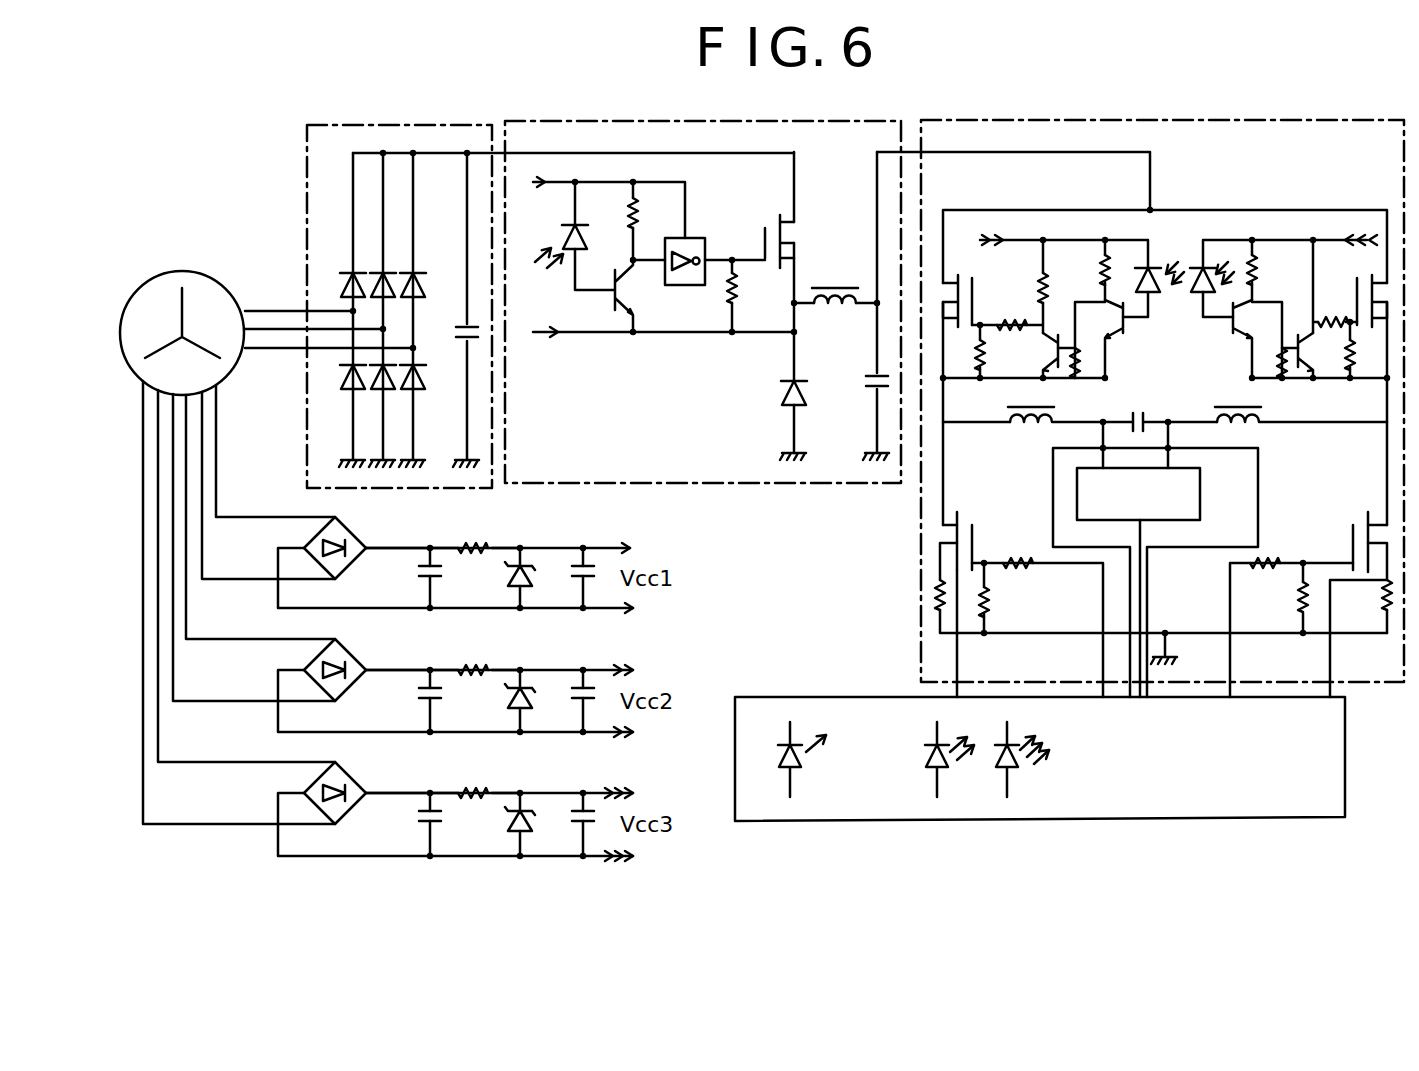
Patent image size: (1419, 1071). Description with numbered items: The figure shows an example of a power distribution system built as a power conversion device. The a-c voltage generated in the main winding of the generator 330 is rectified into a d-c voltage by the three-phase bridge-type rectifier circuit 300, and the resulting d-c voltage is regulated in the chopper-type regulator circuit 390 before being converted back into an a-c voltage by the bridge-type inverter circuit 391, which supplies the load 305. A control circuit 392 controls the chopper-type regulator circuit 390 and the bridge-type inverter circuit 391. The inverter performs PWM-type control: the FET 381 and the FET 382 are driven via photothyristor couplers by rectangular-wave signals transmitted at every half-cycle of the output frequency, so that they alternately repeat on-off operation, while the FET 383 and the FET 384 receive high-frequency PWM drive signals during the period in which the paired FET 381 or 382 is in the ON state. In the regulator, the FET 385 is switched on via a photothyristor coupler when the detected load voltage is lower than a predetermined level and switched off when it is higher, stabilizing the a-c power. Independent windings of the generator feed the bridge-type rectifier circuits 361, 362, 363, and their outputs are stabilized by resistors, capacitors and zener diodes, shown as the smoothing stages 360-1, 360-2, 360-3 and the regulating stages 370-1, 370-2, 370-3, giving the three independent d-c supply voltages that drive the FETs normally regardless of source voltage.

The three-phase bridge-type rectifier circuit 300 is at (306, 170).
The generator 330 is at (223, 247).
The bridge-type rectifier circuit 361 is at (372, 517).
The bridge-type rectifier circuit 362 is at (372, 639).
The bridge-type rectifier circuit 363 is at (372, 761).
The smoothing circuit 360-1 is at (402, 497).
The smoothing circuit 360-2 is at (402, 619).
The smoothing circuit 360-3 is at (402, 742).
The voltage regulator circuit 370-1 is at (603, 542).
The voltage regulator circuit 370-2 is at (603, 664).
The voltage regulator circuit 370-3 is at (603, 787).
The FET 385 is at (770, 225).
The chopper-type regulator circuit 390 is at (758, 485).
The bridge-type inverter circuit 391 is at (921, 637).
The control circuit 392 is at (1118, 820).
The FET 382 is at (962, 332).
The FET 381 is at (1370, 332).
The FET 383 is at (982, 488).
The FET 384 is at (1367, 517).
The load 305 is at (1157, 518).